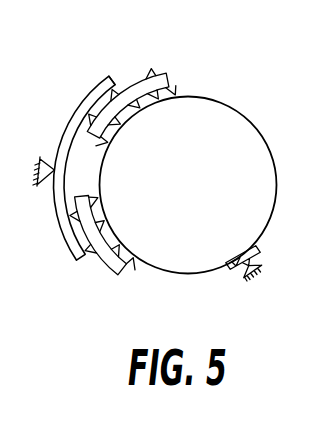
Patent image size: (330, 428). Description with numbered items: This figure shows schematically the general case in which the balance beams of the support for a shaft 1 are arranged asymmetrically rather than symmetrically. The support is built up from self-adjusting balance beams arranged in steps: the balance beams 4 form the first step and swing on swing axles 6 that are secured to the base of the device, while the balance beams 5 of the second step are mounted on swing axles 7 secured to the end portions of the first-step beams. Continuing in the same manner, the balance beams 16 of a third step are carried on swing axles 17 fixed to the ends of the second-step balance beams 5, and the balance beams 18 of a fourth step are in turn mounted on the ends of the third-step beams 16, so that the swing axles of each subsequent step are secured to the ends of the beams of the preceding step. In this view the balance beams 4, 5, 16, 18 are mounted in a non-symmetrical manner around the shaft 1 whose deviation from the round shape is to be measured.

The shaft 1 is at (276, 178).
The balance beam 4 is at (57, 223).
The balance beam 5 is at (133, 70).
The swing axle 6 is at (53, 167).
The swing axle 7 is at (111, 76).
The balance beam 16 is at (159, 70).
The swing axle 17 is at (82, 214).
The balance beam 18 is at (176, 86).